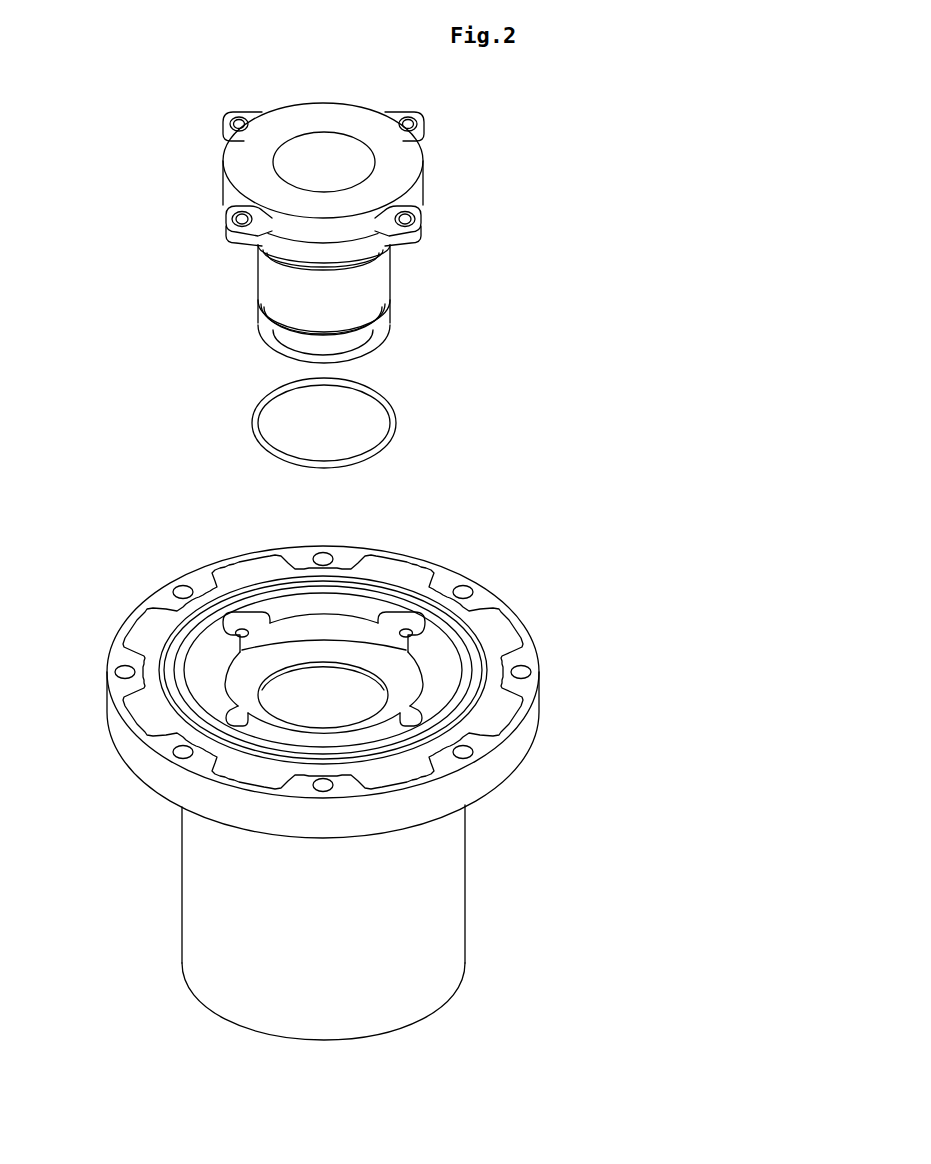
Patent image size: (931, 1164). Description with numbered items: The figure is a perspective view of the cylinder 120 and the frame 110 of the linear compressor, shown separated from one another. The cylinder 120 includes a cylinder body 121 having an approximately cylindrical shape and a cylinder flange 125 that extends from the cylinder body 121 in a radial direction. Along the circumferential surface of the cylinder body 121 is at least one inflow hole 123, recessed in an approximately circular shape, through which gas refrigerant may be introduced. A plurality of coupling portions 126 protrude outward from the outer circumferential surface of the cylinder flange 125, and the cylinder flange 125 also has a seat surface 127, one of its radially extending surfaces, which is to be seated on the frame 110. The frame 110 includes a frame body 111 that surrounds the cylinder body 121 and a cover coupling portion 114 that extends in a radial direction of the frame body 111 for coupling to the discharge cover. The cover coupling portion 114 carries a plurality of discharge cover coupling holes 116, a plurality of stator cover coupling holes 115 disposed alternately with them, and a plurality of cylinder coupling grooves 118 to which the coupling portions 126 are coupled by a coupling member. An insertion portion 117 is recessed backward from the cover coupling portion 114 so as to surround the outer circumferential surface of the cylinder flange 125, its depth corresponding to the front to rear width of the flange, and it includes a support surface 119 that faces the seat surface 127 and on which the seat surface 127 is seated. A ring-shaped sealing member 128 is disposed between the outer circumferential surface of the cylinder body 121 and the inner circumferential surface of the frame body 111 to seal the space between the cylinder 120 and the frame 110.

The frame 110 is at (516, 523).
The frame body 111 is at (200, 872).
The cover coupling portion 114 is at (497, 627).
The stator cover coupling holes 115 is at (497, 727).
The discharge cover coupling holes 116 is at (536, 667).
The insertion portion 117 is at (280, 630).
The cylinder coupling grooves 118 is at (240, 633).
The support surface 119 is at (353, 645).
The cylinder 120 is at (480, 163).
The cylinder body 121 is at (383, 285).
The inflow hole 123 is at (262, 322).
The cylinder flange 125 is at (424, 192).
The coupling portions 126 is at (414, 113).
The seat surface 127 is at (398, 243).
The sealing member 128 is at (393, 418).